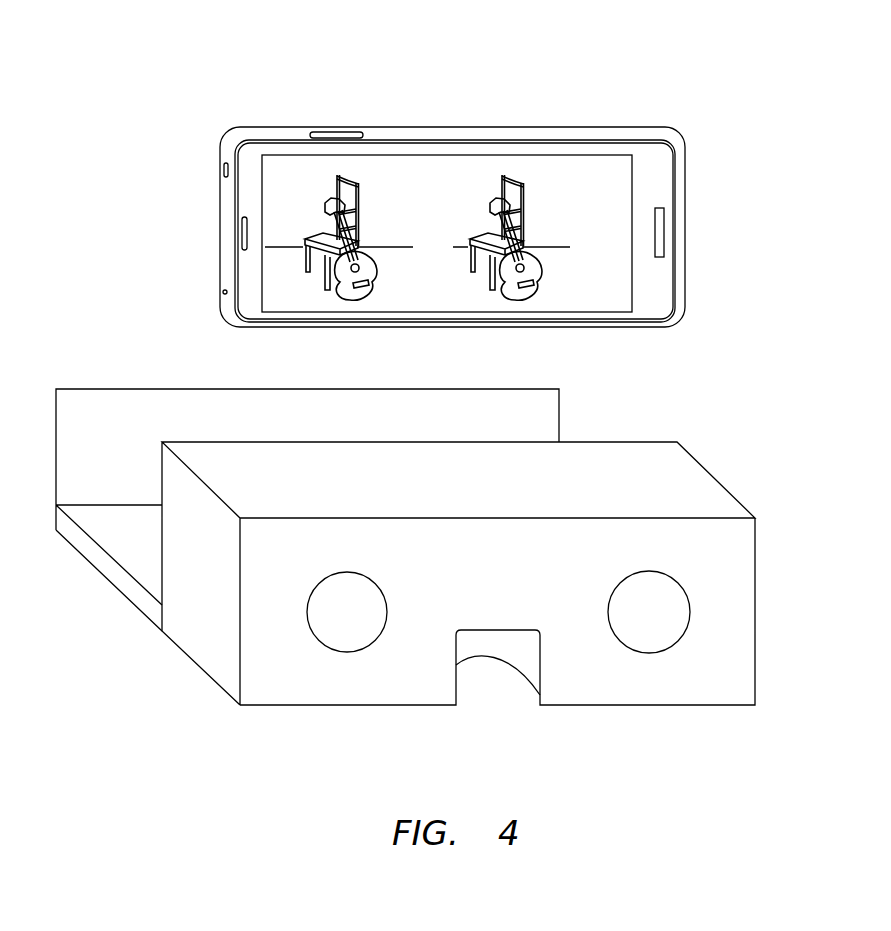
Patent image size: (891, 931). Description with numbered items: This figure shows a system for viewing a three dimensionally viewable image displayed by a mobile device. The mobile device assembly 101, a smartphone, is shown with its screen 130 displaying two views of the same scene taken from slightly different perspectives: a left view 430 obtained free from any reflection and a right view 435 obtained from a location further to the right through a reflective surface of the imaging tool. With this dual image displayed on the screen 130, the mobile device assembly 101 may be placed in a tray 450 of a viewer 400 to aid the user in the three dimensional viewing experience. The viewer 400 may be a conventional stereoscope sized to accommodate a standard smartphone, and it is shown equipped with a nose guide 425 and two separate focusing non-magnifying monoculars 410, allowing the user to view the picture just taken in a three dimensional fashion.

The mobile device assembly 101 is at (753, 138).
The screen 130 is at (430, 192).
The left view 430 is at (317, 210).
The right view 435 is at (530, 183).
The tray 450 is at (123, 415).
The viewer 400 is at (521, 597).
The focusing non-magnifying monoculars 410 is at (344, 643).
The nose guide 425 is at (498, 680).